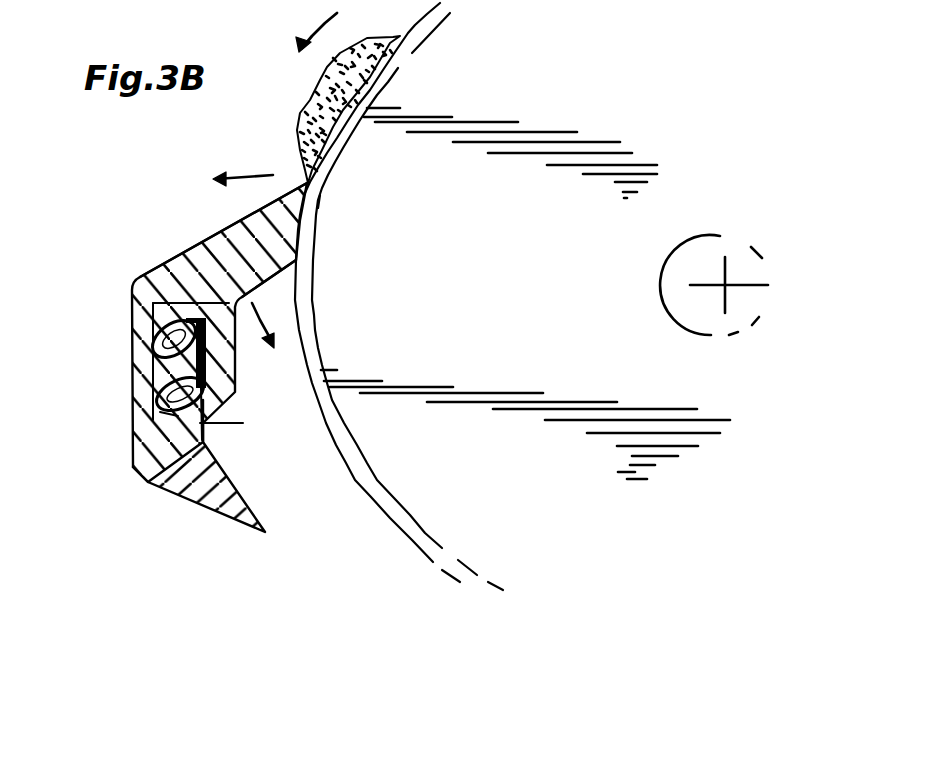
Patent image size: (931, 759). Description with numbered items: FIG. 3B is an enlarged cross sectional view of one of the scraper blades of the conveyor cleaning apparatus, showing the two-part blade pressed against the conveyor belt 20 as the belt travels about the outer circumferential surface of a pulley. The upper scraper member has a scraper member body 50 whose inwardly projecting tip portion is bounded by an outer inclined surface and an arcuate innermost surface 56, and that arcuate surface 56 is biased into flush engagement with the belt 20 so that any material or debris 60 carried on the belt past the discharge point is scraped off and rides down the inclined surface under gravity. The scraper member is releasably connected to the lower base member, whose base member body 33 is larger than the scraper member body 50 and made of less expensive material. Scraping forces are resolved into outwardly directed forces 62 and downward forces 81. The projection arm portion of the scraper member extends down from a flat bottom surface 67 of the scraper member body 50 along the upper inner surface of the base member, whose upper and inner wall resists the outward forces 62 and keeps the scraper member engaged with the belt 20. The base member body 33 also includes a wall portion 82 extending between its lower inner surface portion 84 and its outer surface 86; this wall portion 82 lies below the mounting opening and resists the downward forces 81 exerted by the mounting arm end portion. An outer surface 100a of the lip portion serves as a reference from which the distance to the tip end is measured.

The conveyor belt 20 is at (399, 296).
The material or debris 60 is at (316, 109).
The scraper member body 50 is at (207, 242).
The innermost surface 56 is at (357, 205).
The downward forces 81 is at (156, 262).
The outer surface of the lip portion 100a is at (130, 295).
The outwardly directed forces 62 is at (98, 358).
The outer surface 86 is at (134, 394).
The wall portion 82 is at (108, 430).
The lower inner surface portion 84 is at (242, 379).
The flat bottom surface 67 is at (269, 343).
The base member body 33 is at (168, 466).